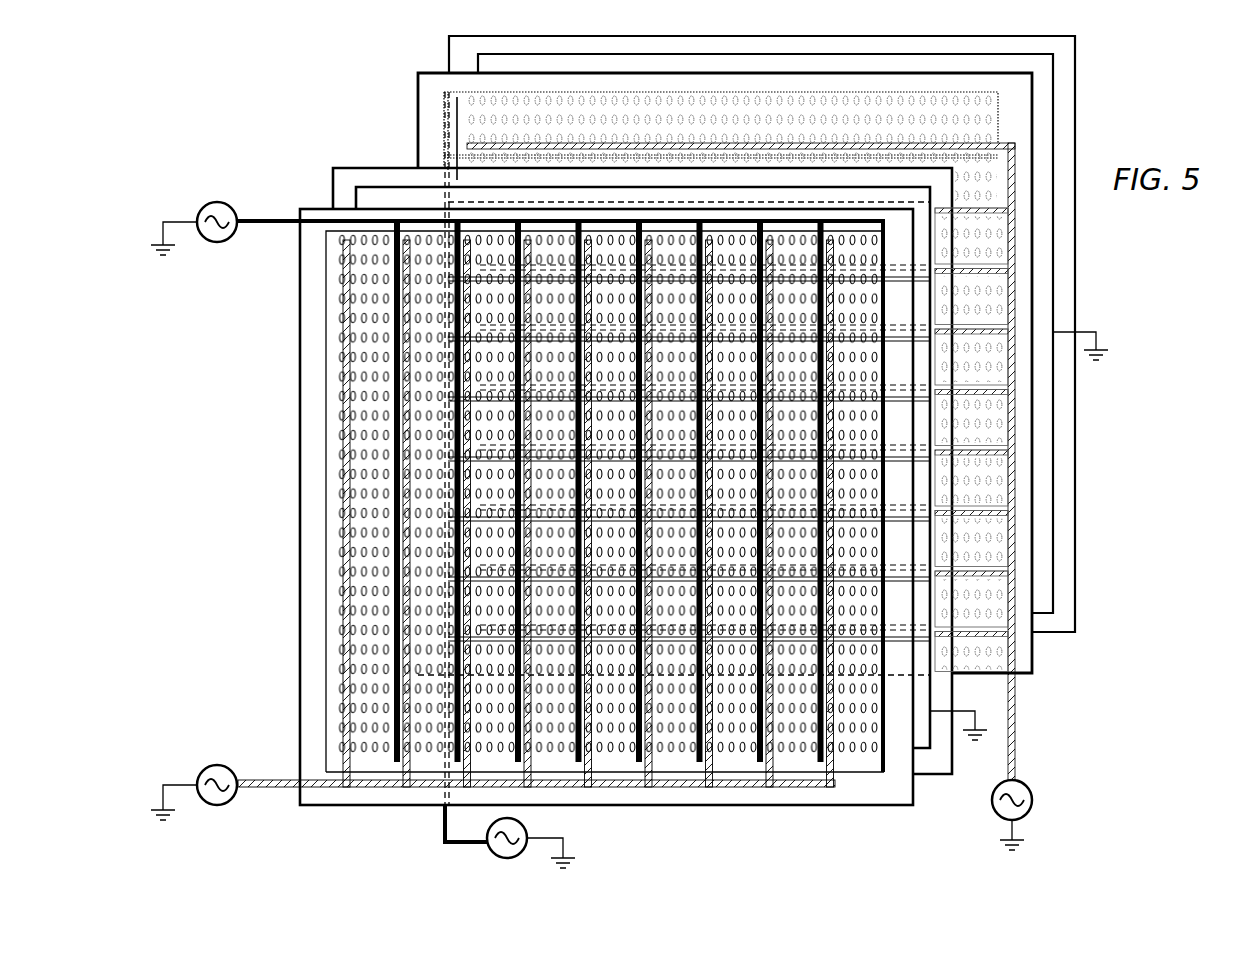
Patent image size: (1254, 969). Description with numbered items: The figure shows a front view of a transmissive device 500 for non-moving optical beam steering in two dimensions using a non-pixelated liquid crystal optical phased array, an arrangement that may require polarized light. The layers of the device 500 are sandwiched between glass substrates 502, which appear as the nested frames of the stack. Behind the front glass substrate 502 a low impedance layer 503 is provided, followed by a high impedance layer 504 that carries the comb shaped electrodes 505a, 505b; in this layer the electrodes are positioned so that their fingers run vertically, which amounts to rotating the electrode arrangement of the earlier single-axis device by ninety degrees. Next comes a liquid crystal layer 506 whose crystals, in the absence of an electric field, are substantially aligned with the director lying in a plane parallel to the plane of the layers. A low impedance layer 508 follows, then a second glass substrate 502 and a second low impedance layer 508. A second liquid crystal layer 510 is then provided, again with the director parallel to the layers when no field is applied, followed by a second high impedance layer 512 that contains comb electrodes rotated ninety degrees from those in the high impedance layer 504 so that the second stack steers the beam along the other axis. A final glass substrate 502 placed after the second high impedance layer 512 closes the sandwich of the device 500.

The device 500 is at (356, 95).
The glass substrate 502 is at (1075, 528).
The low impedance layer 503 is at (934, 737).
The high impedance layer 504 is at (752, 789).
The electrode 505a is at (260, 229).
The electrode 505b is at (265, 797).
The liquid crystal layer 506 is at (325, 500).
The low impedance layer 508 is at (1032, 287).
The second liquid crystal layer 510 is at (998, 118).
The second high impedance layer 512 is at (1015, 694).